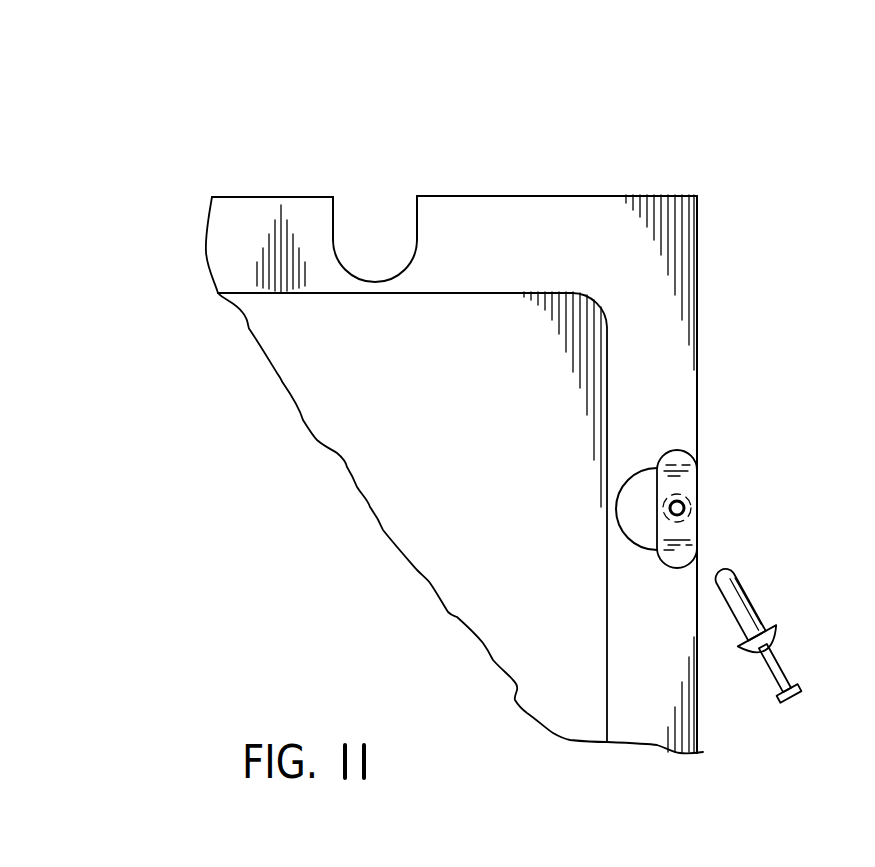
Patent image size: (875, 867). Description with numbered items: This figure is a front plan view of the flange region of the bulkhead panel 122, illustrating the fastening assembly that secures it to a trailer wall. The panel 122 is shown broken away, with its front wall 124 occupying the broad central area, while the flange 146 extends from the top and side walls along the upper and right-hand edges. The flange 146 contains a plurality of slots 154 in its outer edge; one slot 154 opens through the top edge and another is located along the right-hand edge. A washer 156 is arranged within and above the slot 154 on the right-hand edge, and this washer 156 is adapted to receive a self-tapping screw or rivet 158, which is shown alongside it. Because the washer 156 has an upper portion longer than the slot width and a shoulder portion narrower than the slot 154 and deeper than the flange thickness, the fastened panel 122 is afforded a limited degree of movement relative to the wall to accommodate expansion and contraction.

The rectangular panel 122 is at (597, 192).
The front wall 124 is at (482, 471).
The flange 146 is at (683, 370).
The slot 154 is at (412, 216).
The washer 156 is at (686, 479).
The self-tapping screw or rivet 158 is at (752, 612).